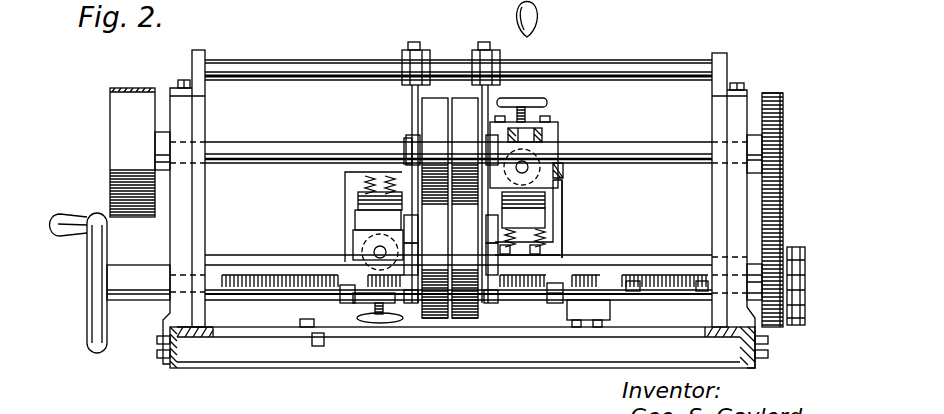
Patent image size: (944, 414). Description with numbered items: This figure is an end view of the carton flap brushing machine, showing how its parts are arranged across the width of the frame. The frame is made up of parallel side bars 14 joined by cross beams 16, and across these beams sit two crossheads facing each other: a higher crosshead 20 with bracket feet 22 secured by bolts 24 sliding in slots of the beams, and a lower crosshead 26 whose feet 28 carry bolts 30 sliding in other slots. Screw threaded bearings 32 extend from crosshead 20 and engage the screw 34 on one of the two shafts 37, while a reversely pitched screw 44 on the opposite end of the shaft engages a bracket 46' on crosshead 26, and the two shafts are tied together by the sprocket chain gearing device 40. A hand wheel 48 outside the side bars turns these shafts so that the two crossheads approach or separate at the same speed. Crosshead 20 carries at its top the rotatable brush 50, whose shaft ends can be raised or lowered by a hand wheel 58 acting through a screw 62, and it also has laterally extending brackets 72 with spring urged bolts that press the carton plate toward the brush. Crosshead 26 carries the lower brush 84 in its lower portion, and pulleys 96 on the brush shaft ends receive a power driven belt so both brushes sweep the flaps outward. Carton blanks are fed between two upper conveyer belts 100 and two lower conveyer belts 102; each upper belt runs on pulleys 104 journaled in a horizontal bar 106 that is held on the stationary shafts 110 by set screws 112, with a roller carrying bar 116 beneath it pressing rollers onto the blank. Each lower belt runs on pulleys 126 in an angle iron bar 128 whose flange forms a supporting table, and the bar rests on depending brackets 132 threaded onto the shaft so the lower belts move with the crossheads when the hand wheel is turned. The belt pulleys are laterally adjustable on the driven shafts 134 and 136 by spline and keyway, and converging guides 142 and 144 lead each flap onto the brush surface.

The side bars 14 is at (172, 368).
The cross beams 16 is at (409, 358).
The crosshead 20 is at (564, 230).
The bracket feet 22 is at (557, 165).
The bolts 24 is at (583, 333).
The crosshead 26 is at (366, 246).
The feet 28 is at (305, 322).
The bolts 30 is at (325, 346).
The screw threaded bearings 32 is at (381, 325).
The screw 34 is at (634, 291).
The shafts 37 is at (702, 291).
The sprocket chain gearing device 40 is at (806, 255).
The screw 44 is at (263, 289).
The clamp 46' is at (315, 301).
The hand wheel 48 is at (63, 219).
The brush 50 is at (567, 172).
The hand wheel 58 is at (547, 101).
The screw 62 is at (527, 120).
The brackets 72 is at (558, 247).
The brush 84 is at (346, 258).
The pulleys 96 is at (346, 233).
The upper conveyer belts 100 is at (450, 201).
The lower conveyer belts 102 is at (434, 307).
The pulleys 104 is at (406, 140).
The horizontal bar 106 is at (441, 164).
The stationary shafts 110 is at (643, 66).
The set screws 112 is at (412, 49).
The roller carrying bar 116 is at (450, 160).
The pulleys 126 is at (486, 270).
The angle iron bar 128 is at (487, 229).
The depending brackets 132 is at (412, 304).
The shaft 134 is at (684, 151).
The shaft 136 is at (684, 263).
The converging guide 142 is at (374, 215).
The converging guide 144 is at (372, 199).